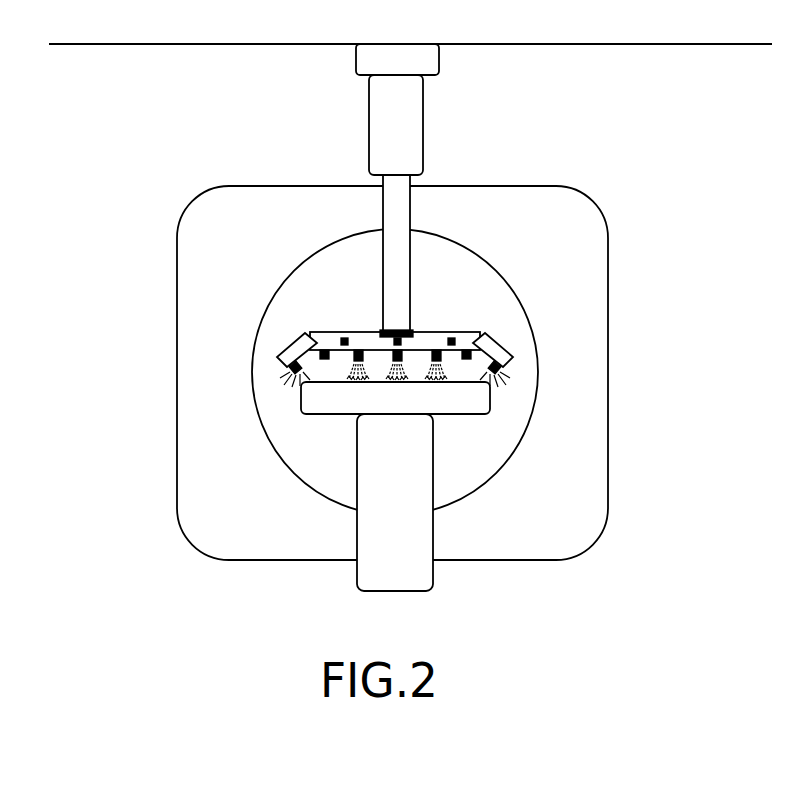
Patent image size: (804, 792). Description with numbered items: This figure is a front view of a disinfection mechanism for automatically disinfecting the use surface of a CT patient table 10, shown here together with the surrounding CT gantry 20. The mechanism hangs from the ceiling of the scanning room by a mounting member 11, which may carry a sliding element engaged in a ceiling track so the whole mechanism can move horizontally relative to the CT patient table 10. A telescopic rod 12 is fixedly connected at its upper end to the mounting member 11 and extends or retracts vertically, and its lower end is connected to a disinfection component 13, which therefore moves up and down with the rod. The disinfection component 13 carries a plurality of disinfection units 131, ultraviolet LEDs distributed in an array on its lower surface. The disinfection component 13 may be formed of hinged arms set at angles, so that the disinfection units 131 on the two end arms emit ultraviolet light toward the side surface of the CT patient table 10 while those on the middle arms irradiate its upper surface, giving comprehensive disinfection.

The CT patient table 10 is at (490, 395).
The mounting member 11 is at (357, 59).
The telescopic rod 12 is at (402, 210).
The disinfection component 13 is at (481, 336).
The disinfection unit 131 is at (357, 382).
The CT gantry 20 is at (197, 204).